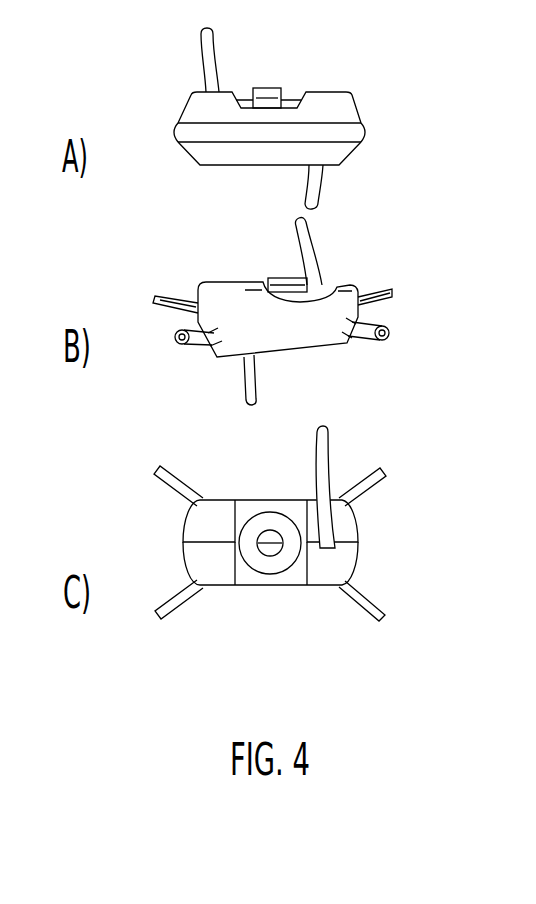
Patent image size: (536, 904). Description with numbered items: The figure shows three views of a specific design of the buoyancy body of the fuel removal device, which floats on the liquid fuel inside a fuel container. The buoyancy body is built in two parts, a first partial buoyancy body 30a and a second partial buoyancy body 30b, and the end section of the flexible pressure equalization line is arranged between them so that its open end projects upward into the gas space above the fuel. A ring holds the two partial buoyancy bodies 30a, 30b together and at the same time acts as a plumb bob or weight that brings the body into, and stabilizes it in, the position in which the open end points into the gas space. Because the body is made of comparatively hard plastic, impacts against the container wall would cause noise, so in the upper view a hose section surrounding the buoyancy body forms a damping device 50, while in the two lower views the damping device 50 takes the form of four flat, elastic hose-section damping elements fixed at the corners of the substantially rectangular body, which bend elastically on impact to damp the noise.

The first partial buoyancy body 30a is at (200, 532).
The second partial buoyancy body 30b is at (200, 568).
The damping device 50 is at (363, 128).